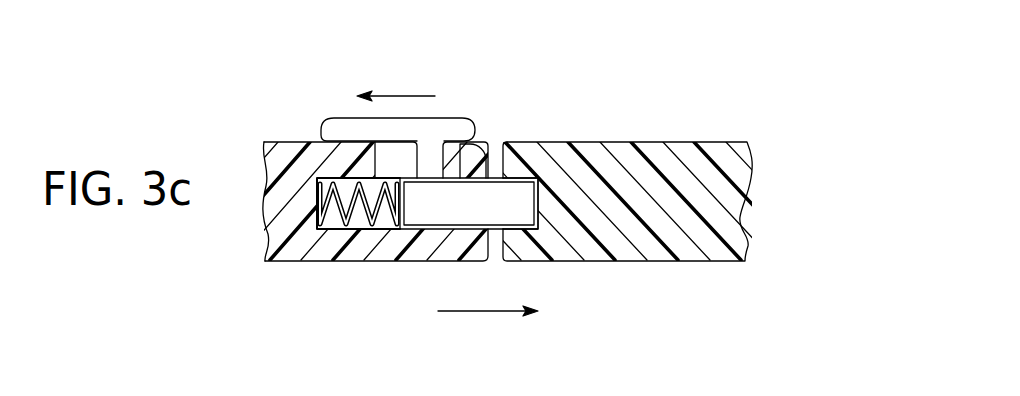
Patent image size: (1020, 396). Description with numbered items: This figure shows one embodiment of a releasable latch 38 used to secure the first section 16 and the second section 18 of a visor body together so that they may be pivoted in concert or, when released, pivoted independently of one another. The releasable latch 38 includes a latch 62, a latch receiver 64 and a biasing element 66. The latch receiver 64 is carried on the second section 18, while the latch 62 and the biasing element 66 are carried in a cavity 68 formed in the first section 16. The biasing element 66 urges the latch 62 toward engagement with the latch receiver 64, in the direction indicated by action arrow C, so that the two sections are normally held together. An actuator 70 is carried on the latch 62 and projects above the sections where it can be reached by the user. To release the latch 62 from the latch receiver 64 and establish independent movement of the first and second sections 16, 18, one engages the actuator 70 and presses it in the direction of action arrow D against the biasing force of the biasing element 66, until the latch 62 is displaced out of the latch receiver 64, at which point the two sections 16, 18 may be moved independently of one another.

The first section 16 is at (295, 178).
The second section 18 is at (712, 178).
The releasable latch 38 is at (503, 123).
The latch 62 is at (468, 212).
The latch receiver 64 is at (533, 198).
The biasing element 66 is at (333, 216).
The cavity 68 is at (382, 218).
The actuator 70 is at (343, 129).
The action arrow D is at (408, 95).
The action arrow C is at (478, 312).